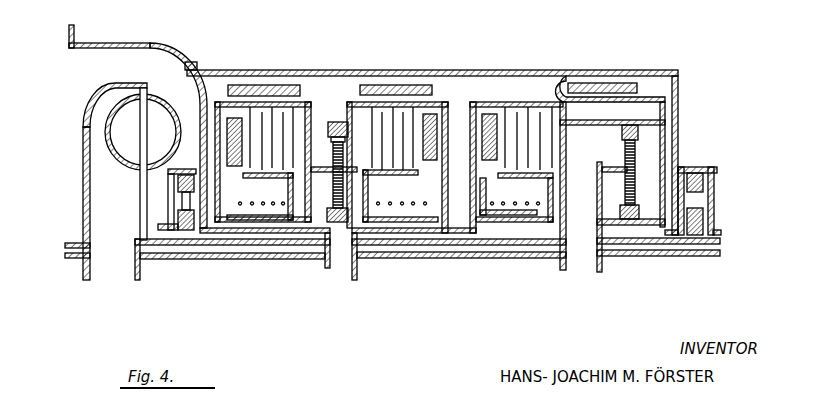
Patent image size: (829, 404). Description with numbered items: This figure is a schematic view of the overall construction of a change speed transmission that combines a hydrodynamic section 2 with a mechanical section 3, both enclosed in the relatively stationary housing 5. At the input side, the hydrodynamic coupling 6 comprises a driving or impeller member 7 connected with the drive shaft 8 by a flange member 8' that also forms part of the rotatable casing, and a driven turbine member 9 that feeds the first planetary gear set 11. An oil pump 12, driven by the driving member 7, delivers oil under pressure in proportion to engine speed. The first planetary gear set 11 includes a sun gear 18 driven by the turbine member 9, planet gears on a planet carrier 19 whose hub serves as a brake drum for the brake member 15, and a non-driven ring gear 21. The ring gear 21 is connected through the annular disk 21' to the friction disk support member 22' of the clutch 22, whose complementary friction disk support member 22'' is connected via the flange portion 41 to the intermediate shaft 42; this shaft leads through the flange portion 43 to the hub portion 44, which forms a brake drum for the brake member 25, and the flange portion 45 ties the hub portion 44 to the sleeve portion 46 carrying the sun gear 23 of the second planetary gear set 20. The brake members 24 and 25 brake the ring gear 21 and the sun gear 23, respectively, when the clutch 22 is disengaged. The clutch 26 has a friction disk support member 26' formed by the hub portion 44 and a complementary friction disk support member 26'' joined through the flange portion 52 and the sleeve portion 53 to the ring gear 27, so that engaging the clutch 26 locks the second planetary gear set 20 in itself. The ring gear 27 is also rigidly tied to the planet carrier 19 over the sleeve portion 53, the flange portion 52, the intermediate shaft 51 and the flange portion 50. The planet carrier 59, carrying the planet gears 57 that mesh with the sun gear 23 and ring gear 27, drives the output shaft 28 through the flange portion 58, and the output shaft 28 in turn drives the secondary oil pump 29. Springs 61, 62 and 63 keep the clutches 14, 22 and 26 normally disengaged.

The hydrodynamic section 2 is at (80, 70).
The mechanical section 3 is at (340, 80).
The housing 5 is at (163, 40).
The hydrodynamic coupling 6 is at (160, 90).
The driving member 7 is at (163, 112).
The drive shaft 8 is at (73, 239).
The flange member 8' is at (69, 159).
The turbine member 9 is at (125, 152).
The first planetary gear set 11 is at (341, 225).
The oil pump 12 is at (178, 205).
The clutch 14 is at (297, 118).
The brake member 15 is at (270, 84).
The sun gear 18 is at (333, 222).
The planet carrier 19 is at (325, 173).
The second planetary gear set 20 is at (648, 176).
The ring gear 21 is at (332, 151).
The annular disk 21' is at (362, 132).
The clutch 22 is at (397, 139).
The friction disk support member 22' is at (452, 74).
The complementary friction disk support member 22'' is at (386, 186).
The sun gear 23 is at (626, 215).
The brake member 24 is at (385, 84).
The brake member 25 is at (612, 84).
The clutch 26 is at (516, 139).
The friction disk support member 26' is at (500, 73).
The complementary friction disk support member 26'' is at (515, 185).
The ring gear 27 is at (650, 128).
The output shaft 28 is at (686, 250).
The oil pump 29 is at (698, 200).
The flange portion 41 is at (372, 228).
The intermediate shaft 42 is at (440, 230).
The flange portion 43 is at (468, 162).
The hub portion 44 is at (558, 84).
The flange portion 45 is at (665, 150).
The sleeve portion 46 is at (648, 216).
The flange portion 50 is at (350, 258).
The intermediate shaft 51 is at (485, 240).
The flange portion 52 is at (568, 188).
The sleeve portion 53 is at (580, 128).
The planet gears 57 is at (626, 189).
The flange portion 58 is at (599, 214).
The planet carrier 59 is at (614, 170).
The spring 61 is at (262, 199).
The spring 62 is at (414, 203).
The spring 63 is at (527, 205).